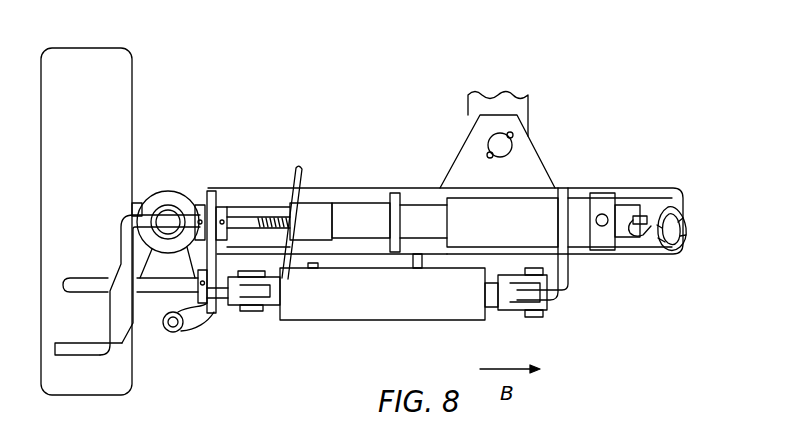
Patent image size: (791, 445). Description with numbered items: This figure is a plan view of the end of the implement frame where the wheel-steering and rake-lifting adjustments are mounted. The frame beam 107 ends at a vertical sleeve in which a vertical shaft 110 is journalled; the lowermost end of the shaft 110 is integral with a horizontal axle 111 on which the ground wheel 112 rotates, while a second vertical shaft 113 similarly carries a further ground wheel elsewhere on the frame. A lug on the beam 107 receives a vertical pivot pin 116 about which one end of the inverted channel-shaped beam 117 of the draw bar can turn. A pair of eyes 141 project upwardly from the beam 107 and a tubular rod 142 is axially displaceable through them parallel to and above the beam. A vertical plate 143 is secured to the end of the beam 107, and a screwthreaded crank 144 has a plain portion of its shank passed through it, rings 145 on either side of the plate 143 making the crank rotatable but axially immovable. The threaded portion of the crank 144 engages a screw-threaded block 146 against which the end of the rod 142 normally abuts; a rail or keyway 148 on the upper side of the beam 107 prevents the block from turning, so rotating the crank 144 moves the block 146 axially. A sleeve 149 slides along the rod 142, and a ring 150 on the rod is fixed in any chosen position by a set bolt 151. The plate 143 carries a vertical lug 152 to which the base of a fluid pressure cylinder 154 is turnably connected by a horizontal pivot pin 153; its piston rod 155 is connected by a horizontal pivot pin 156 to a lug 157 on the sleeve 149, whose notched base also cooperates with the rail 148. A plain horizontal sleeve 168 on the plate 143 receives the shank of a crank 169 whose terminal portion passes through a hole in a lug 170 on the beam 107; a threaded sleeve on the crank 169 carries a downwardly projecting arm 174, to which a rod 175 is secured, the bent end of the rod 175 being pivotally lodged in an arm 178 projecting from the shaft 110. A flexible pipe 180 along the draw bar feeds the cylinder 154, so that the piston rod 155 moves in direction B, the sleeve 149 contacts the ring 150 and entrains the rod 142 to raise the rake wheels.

The beam 107 is at (655, 254).
The vertical shaft 110 is at (170, 205).
The horizontal axle 111 is at (137, 205).
The ground wheel 112 is at (118, 101).
The vertical shaft 113 is at (536, 152).
The vertical pivot pin 116 is at (512, 150).
The beam 117 is at (470, 100).
The eyes 141 is at (395, 191).
The rod 142 is at (358, 212).
The vertical plate 143 is at (212, 190).
The screwthreaded crank 144 is at (127, 244).
The rings 145 is at (200, 205).
The screw-threaded block 146 is at (313, 210).
The rail or keyway 148 is at (655, 216).
The sleeve 149 is at (462, 222).
The ring 150 is at (605, 250).
The set bolt 151 is at (602, 214).
The vertical lug 152 is at (235, 313).
The horizontal pivot pin 153 is at (250, 312).
The fluid pressure cylinder 154 is at (356, 320).
The piston rod 155 is at (490, 294).
The horizontal pivot pin 156 is at (530, 313).
The lug 157 is at (560, 218).
The plain horizontal sleeve 168 is at (228, 257).
The crank 169 is at (78, 347).
The lug 170 is at (418, 269).
The downwardly projecting arm 174 is at (311, 268).
The rod 175 is at (200, 313).
The arm 178 is at (167, 303).
The flexible pipe 180 is at (300, 177).